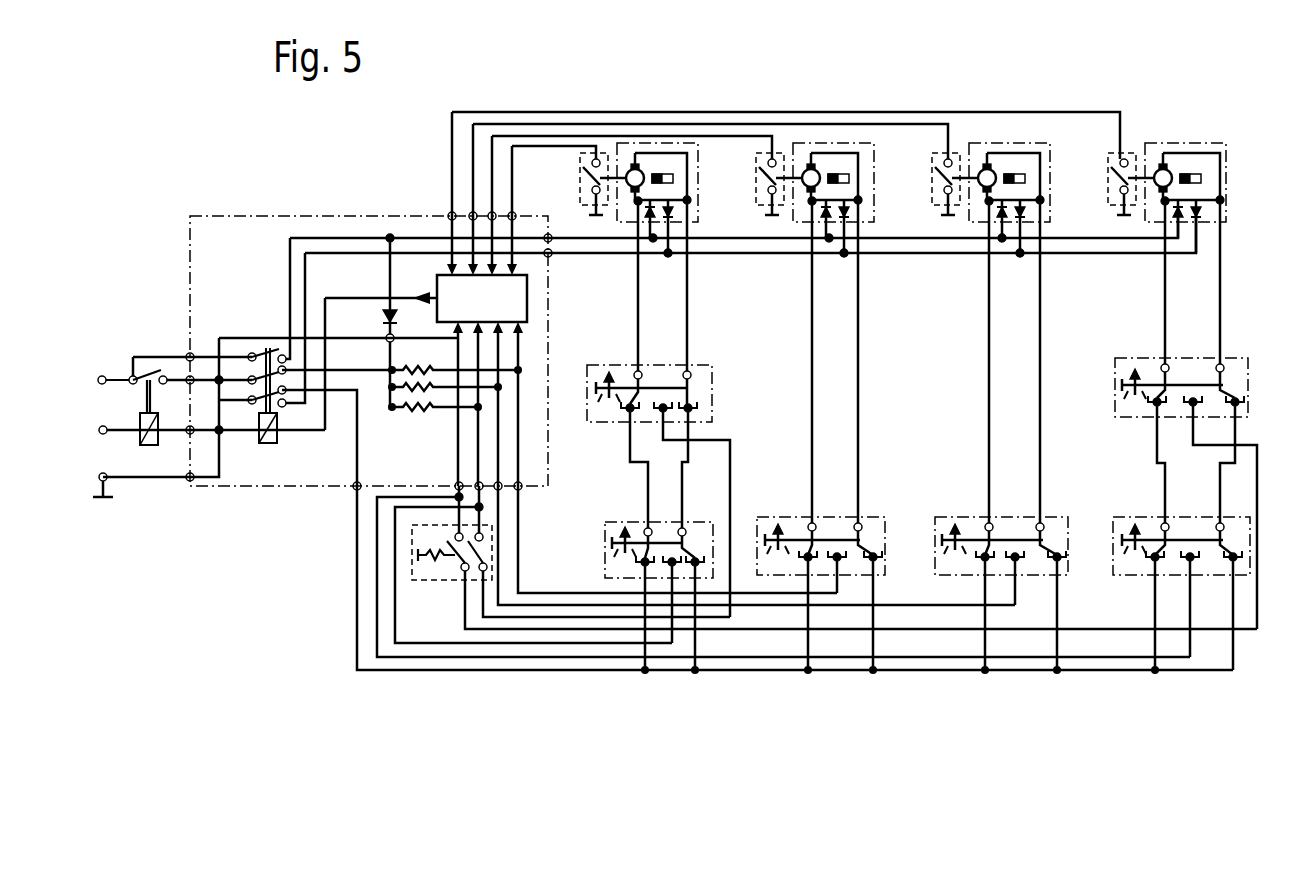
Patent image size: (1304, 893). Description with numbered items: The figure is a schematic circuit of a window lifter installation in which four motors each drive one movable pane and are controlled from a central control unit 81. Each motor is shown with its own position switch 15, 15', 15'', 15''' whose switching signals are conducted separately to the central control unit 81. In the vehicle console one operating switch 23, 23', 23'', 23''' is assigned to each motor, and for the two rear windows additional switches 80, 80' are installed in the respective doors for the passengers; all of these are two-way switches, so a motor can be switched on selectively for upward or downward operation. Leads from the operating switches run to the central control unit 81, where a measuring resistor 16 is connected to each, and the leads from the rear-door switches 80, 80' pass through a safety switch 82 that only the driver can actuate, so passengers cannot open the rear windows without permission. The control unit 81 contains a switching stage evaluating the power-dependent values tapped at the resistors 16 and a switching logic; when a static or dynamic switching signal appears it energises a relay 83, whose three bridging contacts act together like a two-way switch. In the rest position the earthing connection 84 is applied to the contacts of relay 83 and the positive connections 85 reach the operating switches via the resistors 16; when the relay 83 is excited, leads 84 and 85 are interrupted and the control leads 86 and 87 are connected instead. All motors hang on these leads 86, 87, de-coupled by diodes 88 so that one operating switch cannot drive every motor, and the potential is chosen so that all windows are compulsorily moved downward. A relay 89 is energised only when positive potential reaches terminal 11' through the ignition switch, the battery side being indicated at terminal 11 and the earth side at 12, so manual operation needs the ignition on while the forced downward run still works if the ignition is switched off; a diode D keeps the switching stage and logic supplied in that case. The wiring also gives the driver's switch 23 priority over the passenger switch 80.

The terminal 11 is at (127, 373).
The terminal 11' is at (197, 412).
The ground terminal 12 is at (108, 484).
The position switch 15 is at (612, 182).
The position switch 15' is at (788, 182).
The position switch 15'' is at (965, 182).
The position switch 15''' is at (1140, 182).
The measuring resistor 16 is at (418, 430).
The operating switch 23 is at (666, 528).
The operating switch 23' is at (839, 526).
The operating switch 23'' is at (1019, 525).
The operating switch 23''' is at (1175, 567).
The switch 80 is at (672, 374).
The switch 80' is at (1194, 365).
The central control unit 81 is at (548, 343).
The safety switch 82 is at (425, 578).
The relay 83 is at (280, 441).
The earthing connection 84 is at (357, 562).
The positive connections 85 is at (500, 566).
The control lead 86 is at (590, 257).
The control lead 87 is at (570, 236).
The diodes 88 is at (672, 222).
The relay 89 is at (152, 441).
The diode D is at (383, 318).